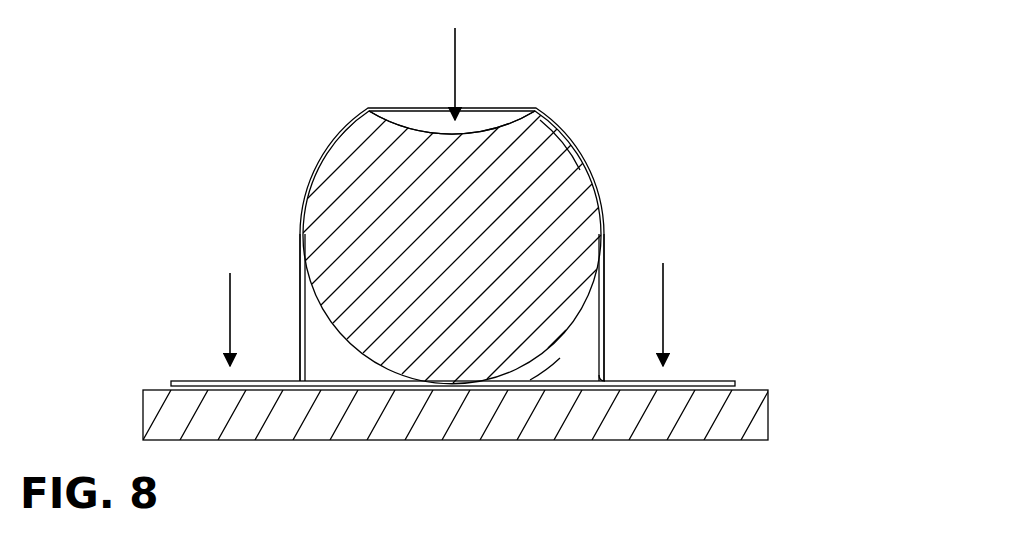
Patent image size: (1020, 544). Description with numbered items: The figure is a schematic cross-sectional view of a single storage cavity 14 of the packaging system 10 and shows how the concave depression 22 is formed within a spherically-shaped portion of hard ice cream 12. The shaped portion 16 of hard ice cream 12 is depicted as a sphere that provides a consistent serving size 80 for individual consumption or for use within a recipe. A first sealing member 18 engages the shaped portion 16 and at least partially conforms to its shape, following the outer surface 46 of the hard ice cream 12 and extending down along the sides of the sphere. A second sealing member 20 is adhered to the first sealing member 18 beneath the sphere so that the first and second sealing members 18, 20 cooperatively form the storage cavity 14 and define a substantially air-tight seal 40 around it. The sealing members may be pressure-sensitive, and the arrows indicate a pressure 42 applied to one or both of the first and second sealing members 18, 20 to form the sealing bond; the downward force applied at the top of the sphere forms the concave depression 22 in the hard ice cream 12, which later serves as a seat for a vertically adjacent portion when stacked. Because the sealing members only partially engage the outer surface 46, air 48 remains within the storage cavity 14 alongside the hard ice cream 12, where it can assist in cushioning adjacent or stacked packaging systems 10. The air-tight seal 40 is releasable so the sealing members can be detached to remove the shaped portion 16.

The packaging system 10 is at (712, 282).
The hard ice cream 12 is at (520, 157).
The storage cavity 14 is at (597, 316).
The shaped portion 16 is at (330, 158).
The first sealing member 18 is at (298, 320).
The second sealing member 20 is at (587, 383).
The concave depression 22 is at (484, 132).
The air-tight seal 40 is at (198, 366).
The pressure 42 is at (228, 310).
The outer surface 46 is at (370, 360).
The air 48 is at (543, 368).
The serving size 80 is at (569, 190).